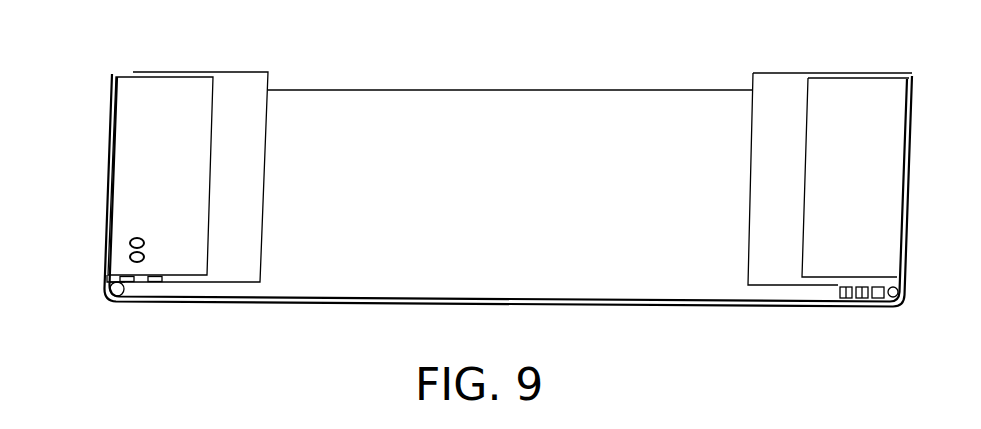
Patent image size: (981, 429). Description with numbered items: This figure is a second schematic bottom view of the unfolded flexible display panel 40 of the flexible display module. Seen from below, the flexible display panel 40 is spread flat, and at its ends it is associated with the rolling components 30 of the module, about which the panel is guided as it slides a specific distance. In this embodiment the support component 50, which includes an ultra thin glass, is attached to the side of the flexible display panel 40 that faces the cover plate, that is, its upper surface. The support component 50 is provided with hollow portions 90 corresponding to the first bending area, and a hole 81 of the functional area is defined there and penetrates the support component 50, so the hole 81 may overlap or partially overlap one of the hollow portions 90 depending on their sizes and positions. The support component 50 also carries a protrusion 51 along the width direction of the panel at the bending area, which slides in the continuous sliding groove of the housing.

The rolling component 30 is at (120, 291).
The flexible display panel 40 is at (862, 118).
The support component 50 is at (790, 117).
The protrusion 51 is at (223, 72).
The hole 81 is at (123, 240).
The hollow portion 90 is at (158, 72).